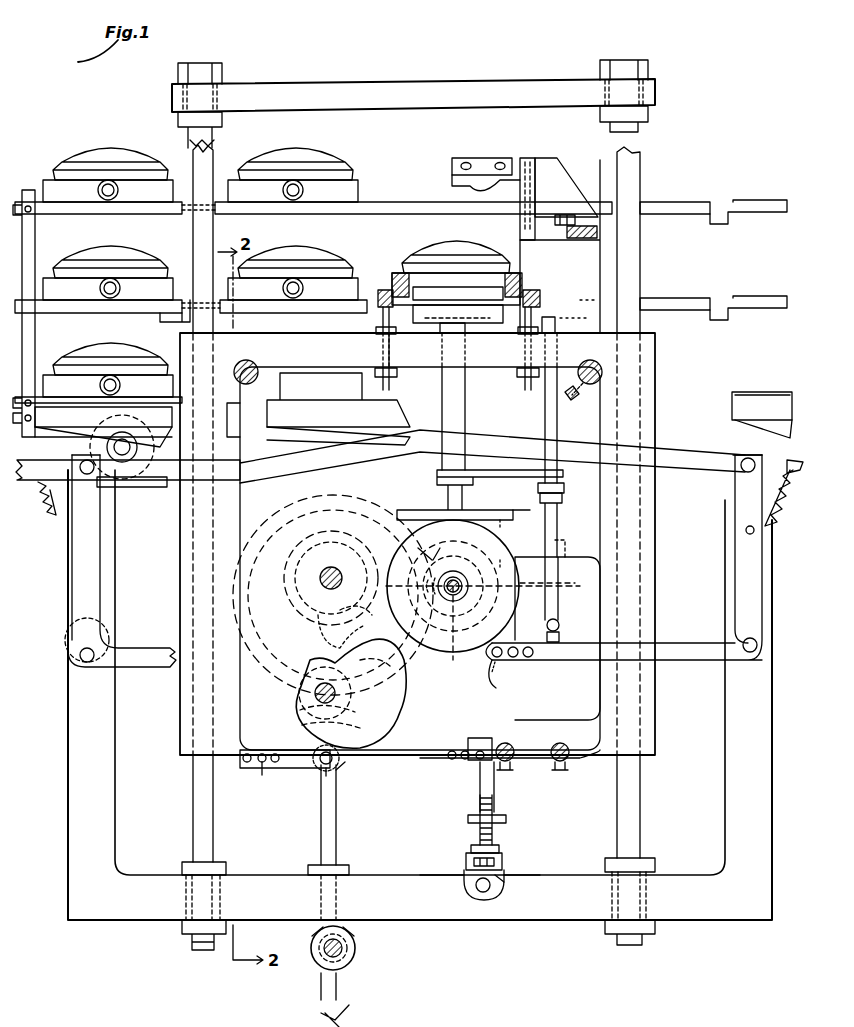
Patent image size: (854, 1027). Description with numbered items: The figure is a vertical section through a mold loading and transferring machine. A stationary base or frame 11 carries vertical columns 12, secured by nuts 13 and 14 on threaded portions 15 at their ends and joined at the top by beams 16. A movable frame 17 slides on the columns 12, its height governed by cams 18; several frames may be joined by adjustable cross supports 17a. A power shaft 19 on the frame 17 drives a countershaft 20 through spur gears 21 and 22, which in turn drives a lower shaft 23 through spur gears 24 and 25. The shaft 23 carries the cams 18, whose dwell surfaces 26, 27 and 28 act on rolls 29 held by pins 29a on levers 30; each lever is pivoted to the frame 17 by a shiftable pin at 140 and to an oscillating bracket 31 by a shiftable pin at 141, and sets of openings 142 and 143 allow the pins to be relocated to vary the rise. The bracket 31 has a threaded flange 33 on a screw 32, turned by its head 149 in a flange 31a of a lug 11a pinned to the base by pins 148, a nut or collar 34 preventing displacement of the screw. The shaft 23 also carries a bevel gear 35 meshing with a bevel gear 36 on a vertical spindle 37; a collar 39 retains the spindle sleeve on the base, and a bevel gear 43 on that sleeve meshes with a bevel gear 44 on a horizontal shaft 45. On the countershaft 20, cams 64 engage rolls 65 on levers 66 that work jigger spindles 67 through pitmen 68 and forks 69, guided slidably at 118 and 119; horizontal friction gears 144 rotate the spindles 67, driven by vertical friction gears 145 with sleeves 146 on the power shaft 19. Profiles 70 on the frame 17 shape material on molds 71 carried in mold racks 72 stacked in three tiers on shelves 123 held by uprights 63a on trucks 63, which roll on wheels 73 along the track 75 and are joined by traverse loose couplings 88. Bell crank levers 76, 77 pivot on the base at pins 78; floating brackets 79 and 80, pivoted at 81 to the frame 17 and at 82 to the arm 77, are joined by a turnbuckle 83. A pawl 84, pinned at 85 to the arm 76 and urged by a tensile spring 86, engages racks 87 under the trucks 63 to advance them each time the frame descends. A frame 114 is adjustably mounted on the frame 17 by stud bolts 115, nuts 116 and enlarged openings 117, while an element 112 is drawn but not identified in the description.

The stationary base or frame 11 is at (480, 891).
The lug 11a is at (503, 870).
The vertical column 12 is at (193, 808).
The nut 13 is at (222, 124).
The nut 14 is at (600, 78).
The threaded portion 15 is at (640, 845).
The beam 16 is at (413, 95).
The movable frame 17 is at (602, 266).
The adjustable cross support 17a is at (246, 360).
The cam 18 is at (405, 700).
The power shaft 19 is at (455, 562).
The countershaft 20 is at (340, 572).
The spur gear 21 is at (452, 656).
The spur gear 22 is at (372, 502).
The shaft 23 is at (315, 693).
The spur gear 24 is at (290, 580).
The spur gear 25 is at (280, 628).
The dwell surface 26 is at (318, 628).
The dwell surface 27 is at (300, 720).
The dwell surface 28 is at (405, 685).
The roll 29 is at (320, 768).
The pin 29a is at (303, 790).
The lever 30 is at (418, 760).
The oscillating bracket 31 is at (478, 778).
The flange 31a is at (466, 860).
The screw 32 is at (478, 838).
The threaded flange 33 is at (468, 818).
The nut or collar 34 is at (498, 845).
The bevel gear 35 is at (358, 688).
The bevel gear 36 is at (468, 748).
The vertical spindle 37 is at (337, 820).
The collar 39 is at (349, 870).
The bevel gear 43 is at (356, 934).
The bevel gear 44 is at (355, 950).
The horizontal shaft 45 is at (338, 956).
The carrier or truck 63 is at (413, 400).
The upright 63a is at (36, 330).
The cam 64 is at (290, 556).
The roll 65 is at (341, 637).
The lever 66 is at (558, 622).
The jigger spindle 67 is at (466, 424).
The pitman 68 is at (562, 500).
The fork 69 is at (564, 488).
The profile 70 is at (482, 158).
The mold 71 is at (130, 252).
The mold rack 72 is at (153, 203).
The wheel 73 is at (82, 458).
The track 75 is at (143, 488).
The bell crank lever arm 76 is at (100, 592).
The horizontal arm 77 is at (145, 648).
The pin 78 is at (80, 660).
The floating link or bracket 79 is at (500, 542).
The floating link or bracket 80 is at (498, 670).
The pivot connection 81 is at (510, 518).
The pivot connection 82 is at (509, 685).
The turnbuckle 83 is at (557, 638).
The pawl 84 is at (272, 470).
The pin 85 is at (776, 448).
The tensile spring 86 is at (43, 510).
The rack 87 is at (740, 436).
The traverse loose coupling 88 is at (720, 222).
The screw 112 is at (98, 190).
The frame 114 is at (575, 238).
The stud bolt 115 is at (530, 302).
The nut 116 is at (376, 330).
The enlarged opening 117 is at (381, 352).
The slidable connection 118 is at (441, 352).
The slidable connection 119 is at (579, 544).
The shelf 123 is at (76, 218).
The shiftable pin 140 is at (259, 785).
The shiftable pin 141 is at (484, 750).
The set of multiple openings 142 is at (240, 760).
The set of multiple openings 143 is at (455, 750).
The horizontally disposed friction gear 144 is at (500, 500).
The vertically disposed friction gear 145 is at (429, 544).
The sleeve 146 is at (411, 584).
The pin 148 is at (490, 890).
The head 149 is at (504, 878).